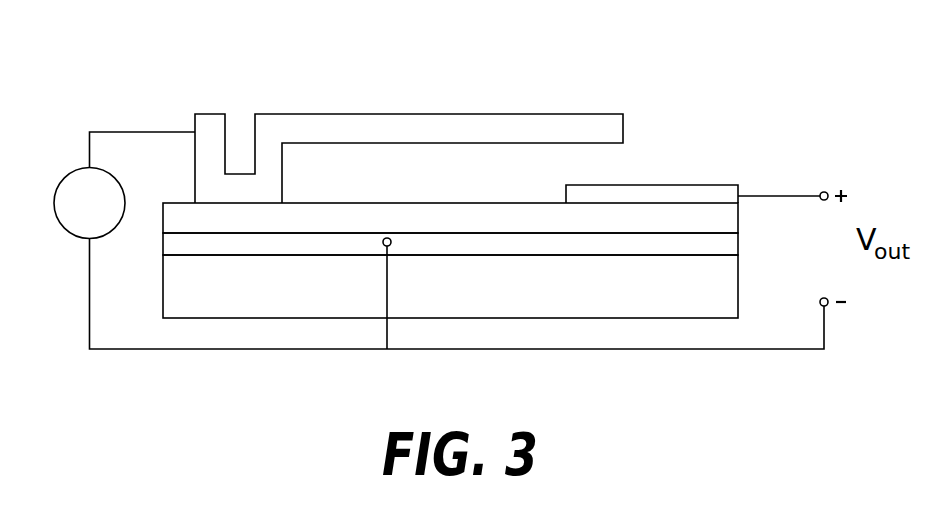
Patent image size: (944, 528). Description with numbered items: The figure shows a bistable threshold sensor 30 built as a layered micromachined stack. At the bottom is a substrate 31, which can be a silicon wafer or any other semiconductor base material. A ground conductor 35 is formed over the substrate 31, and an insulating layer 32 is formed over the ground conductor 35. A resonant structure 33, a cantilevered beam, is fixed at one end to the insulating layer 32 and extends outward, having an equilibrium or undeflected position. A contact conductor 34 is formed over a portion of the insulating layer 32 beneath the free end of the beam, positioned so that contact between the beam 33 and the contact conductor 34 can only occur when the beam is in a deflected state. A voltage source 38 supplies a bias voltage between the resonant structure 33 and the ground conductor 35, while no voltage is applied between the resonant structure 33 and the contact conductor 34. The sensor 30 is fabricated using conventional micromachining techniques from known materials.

The sensor 30 is at (360, 82).
The substrate 31 is at (163, 282).
The insulating layer 32 is at (393, 203).
The resonant structure 33 is at (595, 114).
The contact conductor 34 is at (655, 185).
The ground conductor 35 is at (163, 242).
The voltage source 38 is at (74, 167).